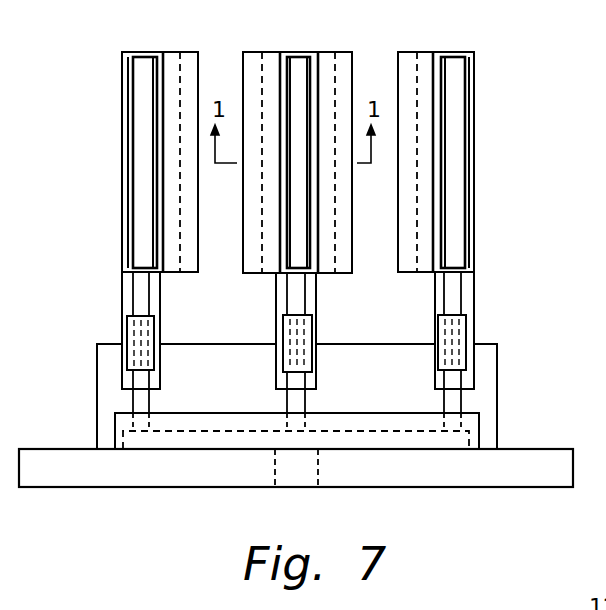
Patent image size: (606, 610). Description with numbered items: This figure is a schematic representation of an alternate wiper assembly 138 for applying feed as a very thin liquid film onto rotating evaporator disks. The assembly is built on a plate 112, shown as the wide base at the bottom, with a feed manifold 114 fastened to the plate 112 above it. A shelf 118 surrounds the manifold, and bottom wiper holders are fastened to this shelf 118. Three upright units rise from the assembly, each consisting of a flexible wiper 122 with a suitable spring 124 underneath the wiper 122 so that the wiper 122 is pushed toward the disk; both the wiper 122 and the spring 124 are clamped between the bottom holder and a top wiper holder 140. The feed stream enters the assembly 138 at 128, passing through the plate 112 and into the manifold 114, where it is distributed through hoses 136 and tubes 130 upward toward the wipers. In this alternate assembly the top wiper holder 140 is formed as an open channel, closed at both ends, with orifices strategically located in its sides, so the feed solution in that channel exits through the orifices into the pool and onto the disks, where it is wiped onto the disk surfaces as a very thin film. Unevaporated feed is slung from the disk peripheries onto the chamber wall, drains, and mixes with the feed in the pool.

The plate 112 is at (533, 447).
The feed manifold 114 is at (325, 412).
The shelf 118 is at (497, 375).
The flexible wiper 122 is at (398, 98).
The spring 124 is at (262, 93).
The stream entry point 128 is at (293, 487).
The tube 130 is at (157, 297).
The hose 136 is at (157, 335).
The alternate wiper assembly 138 is at (112, 294).
The top wiper holder 140 is at (468, 82).